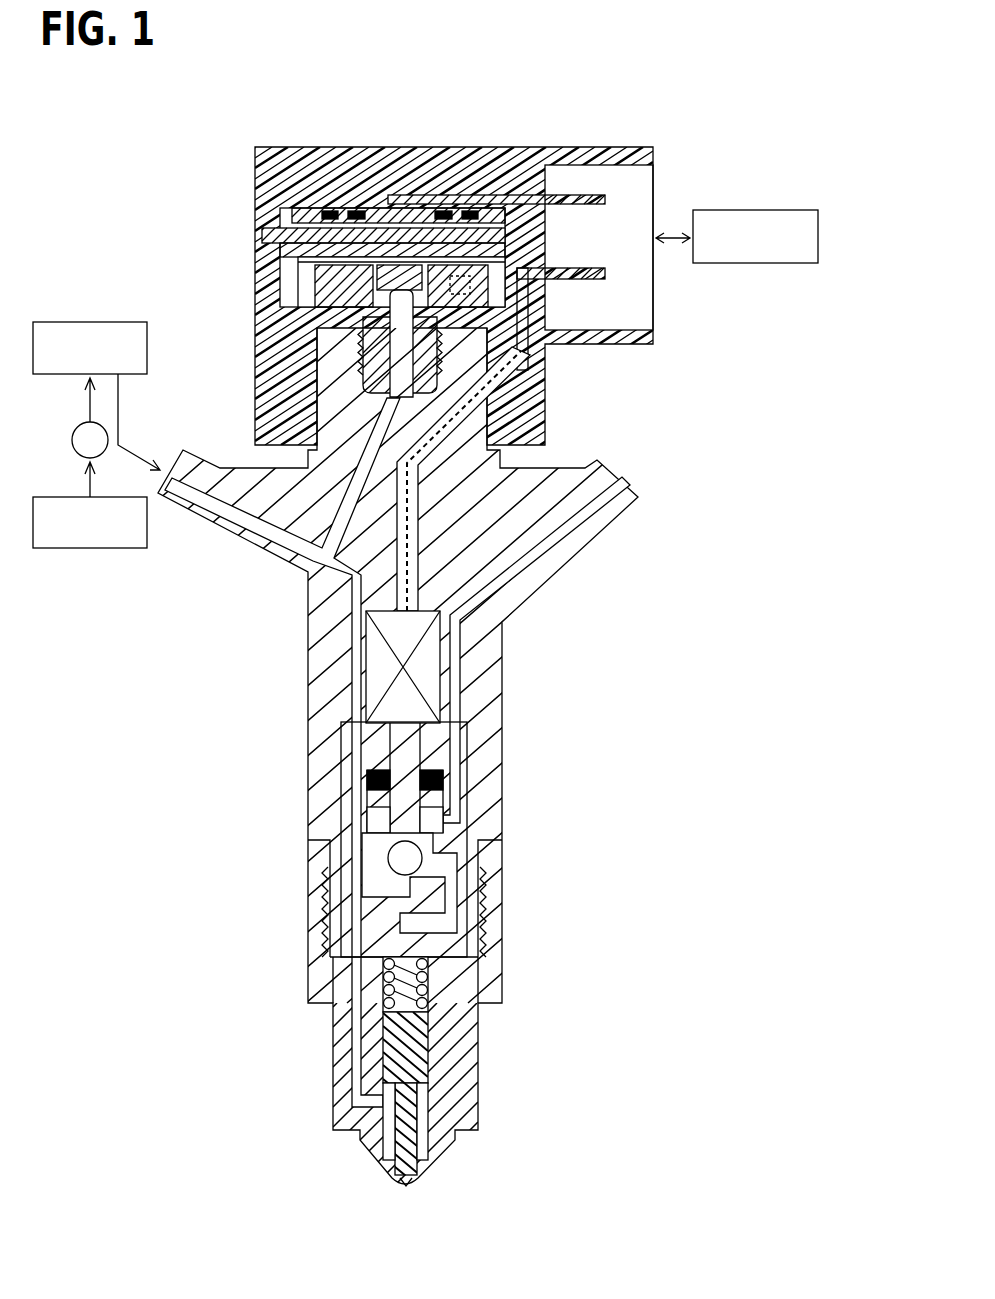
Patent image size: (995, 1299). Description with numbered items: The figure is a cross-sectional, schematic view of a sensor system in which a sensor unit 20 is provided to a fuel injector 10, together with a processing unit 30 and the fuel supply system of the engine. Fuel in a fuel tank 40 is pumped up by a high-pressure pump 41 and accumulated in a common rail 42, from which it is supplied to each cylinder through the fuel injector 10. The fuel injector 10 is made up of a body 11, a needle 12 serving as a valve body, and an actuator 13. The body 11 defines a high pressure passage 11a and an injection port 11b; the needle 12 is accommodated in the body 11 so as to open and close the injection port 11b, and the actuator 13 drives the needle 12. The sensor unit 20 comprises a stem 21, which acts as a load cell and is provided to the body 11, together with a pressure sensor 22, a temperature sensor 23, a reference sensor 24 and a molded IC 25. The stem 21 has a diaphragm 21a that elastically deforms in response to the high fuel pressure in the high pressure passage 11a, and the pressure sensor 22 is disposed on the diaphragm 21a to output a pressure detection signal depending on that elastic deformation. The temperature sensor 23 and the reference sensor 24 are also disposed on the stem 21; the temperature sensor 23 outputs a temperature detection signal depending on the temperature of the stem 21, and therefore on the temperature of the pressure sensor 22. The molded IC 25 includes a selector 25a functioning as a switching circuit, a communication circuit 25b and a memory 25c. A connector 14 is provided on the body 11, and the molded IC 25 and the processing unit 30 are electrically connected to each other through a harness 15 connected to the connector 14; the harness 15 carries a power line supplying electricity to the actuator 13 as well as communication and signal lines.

The fuel injector 10 is at (226, 203).
The body 11 is at (405, 765).
The high pressure passage 11a is at (242, 518).
The injection port 11b is at (416, 1176).
The needle 12 is at (430, 1052).
The actuator 13 is at (385, 682).
The connector 14 is at (699, 152).
The harness 15 is at (672, 244).
The sensor unit 20 is at (462, 260).
The stem 21 is at (365, 345).
The diaphragm 21a is at (525, 342).
The pressure sensor 22 is at (364, 237).
The temperature sensor 23 is at (356, 215).
The reference sensor 24 is at (443, 215).
The molded IC 25 is at (468, 270).
The selector 25a is at (445, 203).
The communication circuit 25b is at (383, 235).
The memory 25c is at (392, 250).
The processing unit 30 is at (731, 210).
The fuel tank 40 is at (90, 549).
The high-pressure pump 41 is at (72, 440).
The common rail 42 is at (90, 321).